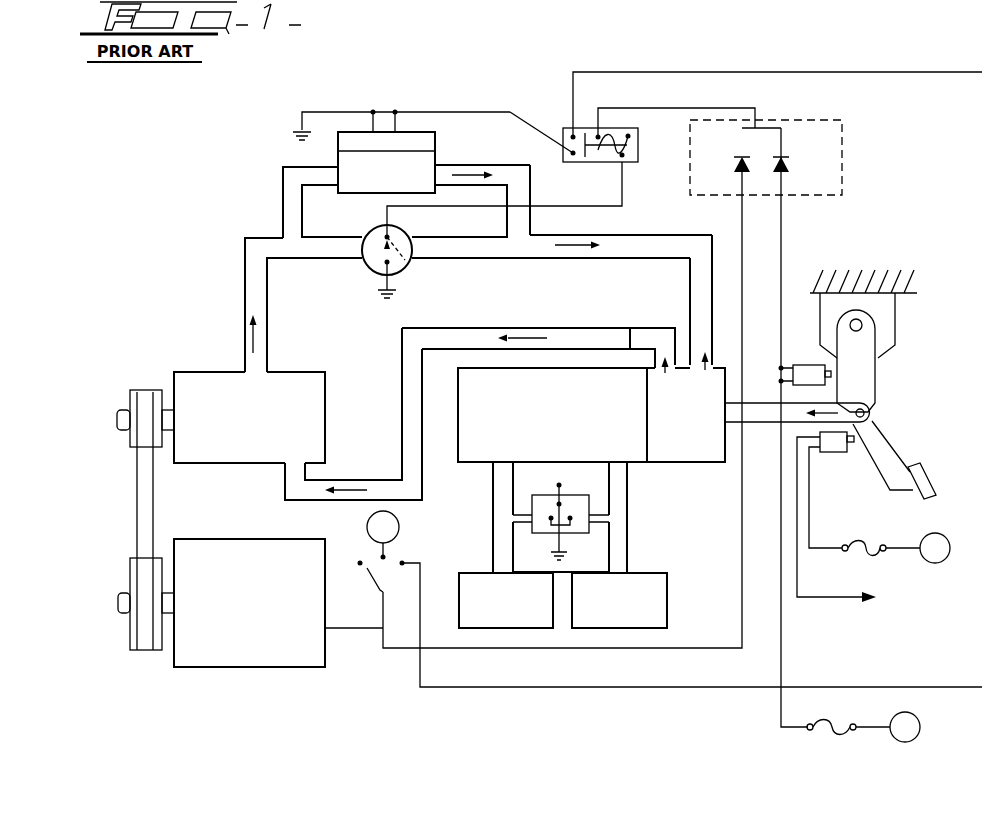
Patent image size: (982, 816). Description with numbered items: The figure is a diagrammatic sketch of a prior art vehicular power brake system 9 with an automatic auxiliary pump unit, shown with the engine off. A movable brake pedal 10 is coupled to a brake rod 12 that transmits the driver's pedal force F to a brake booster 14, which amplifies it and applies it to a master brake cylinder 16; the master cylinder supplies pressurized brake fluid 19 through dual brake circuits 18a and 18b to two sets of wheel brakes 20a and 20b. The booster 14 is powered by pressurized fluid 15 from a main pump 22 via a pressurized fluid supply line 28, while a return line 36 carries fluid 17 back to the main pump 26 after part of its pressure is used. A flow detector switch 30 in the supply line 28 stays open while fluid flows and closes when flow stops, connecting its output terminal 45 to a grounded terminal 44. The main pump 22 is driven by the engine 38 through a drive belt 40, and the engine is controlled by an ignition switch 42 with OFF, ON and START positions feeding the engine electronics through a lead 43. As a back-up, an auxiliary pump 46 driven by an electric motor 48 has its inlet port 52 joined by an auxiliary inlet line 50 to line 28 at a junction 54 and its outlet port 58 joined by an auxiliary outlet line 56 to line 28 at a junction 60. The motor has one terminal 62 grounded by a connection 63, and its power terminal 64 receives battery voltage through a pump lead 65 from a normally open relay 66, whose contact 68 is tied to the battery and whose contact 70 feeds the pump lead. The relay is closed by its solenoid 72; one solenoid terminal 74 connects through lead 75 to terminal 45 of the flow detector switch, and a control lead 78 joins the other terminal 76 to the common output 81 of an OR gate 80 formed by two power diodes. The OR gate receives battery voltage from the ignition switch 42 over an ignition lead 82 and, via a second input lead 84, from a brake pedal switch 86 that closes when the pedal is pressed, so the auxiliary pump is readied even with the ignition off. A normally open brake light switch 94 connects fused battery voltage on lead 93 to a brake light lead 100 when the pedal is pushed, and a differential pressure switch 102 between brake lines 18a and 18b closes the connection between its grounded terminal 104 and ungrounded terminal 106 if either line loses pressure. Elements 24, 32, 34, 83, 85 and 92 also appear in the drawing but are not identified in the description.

The power brake system 9 is at (148, 162).
The brake pedal 10 is at (912, 431).
The brake rod 12 is at (877, 410).
The brake booster 14 is at (688, 460).
The pressurized fluid 15 is at (692, 278).
The master brake cylinder 16 is at (483, 462).
The fluid 17 is at (630, 338).
The brake circuit 18a is at (493, 529).
The brake circuit 18b is at (627, 510).
The pressurized brake fluid 19 is at (500, 490).
The wheel brakes 20a is at (490, 624).
The wheel brakes 20b is at (603, 624).
The main pump 22 is at (326, 410).
The main pump inlet 24 is at (245, 368).
The main pump 26 is at (285, 470).
The pressurized fluid supply line 28 is at (268, 303).
The flow detector switch 30 is at (407, 263).
The booster inlet port 32 is at (708, 360).
The booster return port 34 is at (662, 370).
The return line 36 is at (560, 318).
The engine 38 is at (233, 539).
The drive belt 40 is at (135, 524).
The ignition switch 42 is at (368, 592).
The lead 43 is at (363, 629).
The grounded terminal 44 is at (372, 267).
The output terminal 45 is at (388, 238).
The auxiliary pump 46 is at (358, 194).
The electric motor 48 is at (435, 142).
The auxiliary inlet line 50 is at (283, 166).
The inlet port 52 is at (338, 166).
The junction 54 is at (283, 237).
The auxiliary outlet line 56 is at (497, 165).
The outlet port 58 is at (437, 164).
The junction 60 is at (540, 237).
The terminal 62 is at (373, 111).
The connection 63 is at (333, 111).
The power terminal 64 is at (395, 111).
The pump lead 65 is at (455, 112).
The relay 66 is at (639, 137).
The relay contact 68 is at (573, 135).
The relay contact 70 is at (573, 157).
The solenoid 72 is at (632, 131).
The solenoid terminal 74 is at (624, 156).
The lead 75 is at (623, 195).
The solenoid terminal 76 is at (600, 136).
The control lead 78 is at (685, 108).
The OR gate 80 is at (843, 122).
The common output 81 is at (756, 128).
The ignition lead 82 is at (742, 601).
The start lead 83 is at (602, 688).
The second input lead 84 is at (782, 222).
The relay power lead 85 is at (625, 72).
The brake pedal switch 86 is at (800, 364).
The battery lead with fuse F1 92 is at (779, 497).
The lead 93 is at (810, 500).
The brake light switch 94 is at (830, 453).
The brake light lead 100 is at (822, 598).
The differential pressure switch 102 is at (572, 535).
The grounded terminal 104 is at (545, 535).
The ungrounded terminal 106 is at (540, 470).
The pedal force F is at (940, 478).